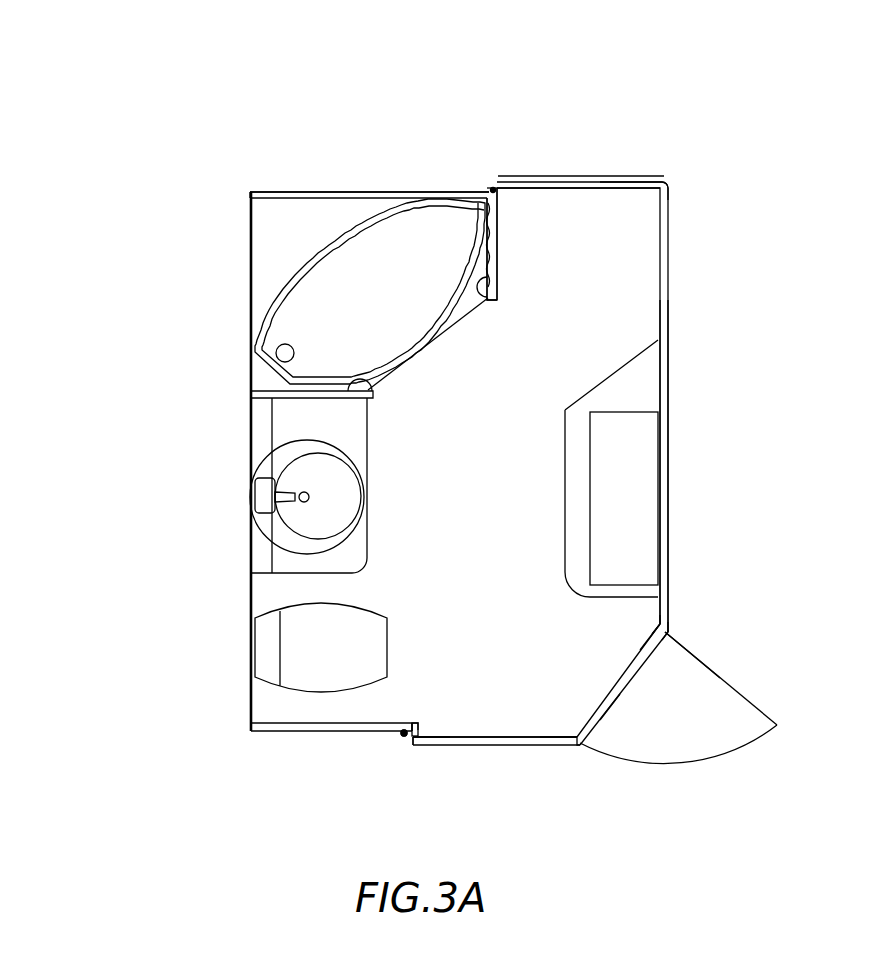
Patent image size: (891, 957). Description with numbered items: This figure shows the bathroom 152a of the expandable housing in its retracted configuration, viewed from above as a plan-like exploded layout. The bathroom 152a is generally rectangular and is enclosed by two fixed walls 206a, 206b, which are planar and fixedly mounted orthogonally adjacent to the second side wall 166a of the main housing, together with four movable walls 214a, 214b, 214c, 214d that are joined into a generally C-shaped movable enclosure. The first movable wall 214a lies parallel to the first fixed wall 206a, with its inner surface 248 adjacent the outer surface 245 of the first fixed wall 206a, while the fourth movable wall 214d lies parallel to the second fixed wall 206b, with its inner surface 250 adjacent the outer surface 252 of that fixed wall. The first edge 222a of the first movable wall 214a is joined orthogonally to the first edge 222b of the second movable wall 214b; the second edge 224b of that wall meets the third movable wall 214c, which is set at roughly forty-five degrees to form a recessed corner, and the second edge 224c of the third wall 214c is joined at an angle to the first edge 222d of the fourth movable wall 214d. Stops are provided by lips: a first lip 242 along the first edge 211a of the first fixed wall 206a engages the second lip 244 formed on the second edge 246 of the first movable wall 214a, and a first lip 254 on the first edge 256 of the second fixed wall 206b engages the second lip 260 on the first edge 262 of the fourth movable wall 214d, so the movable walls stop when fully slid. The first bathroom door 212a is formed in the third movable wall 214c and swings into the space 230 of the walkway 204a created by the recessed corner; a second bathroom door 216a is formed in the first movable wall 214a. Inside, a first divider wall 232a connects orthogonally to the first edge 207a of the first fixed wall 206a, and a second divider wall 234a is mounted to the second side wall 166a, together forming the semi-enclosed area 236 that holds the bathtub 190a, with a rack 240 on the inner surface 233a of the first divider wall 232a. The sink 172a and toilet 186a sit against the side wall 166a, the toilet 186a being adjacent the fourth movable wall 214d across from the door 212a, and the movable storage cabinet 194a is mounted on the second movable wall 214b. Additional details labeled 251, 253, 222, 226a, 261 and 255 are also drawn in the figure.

The bathroom 152a is at (402, 152).
The first fixed wall 206a is at (260, 192).
The outer surface of the first fixed wall 245 is at (347, 192).
The first edge of the first fixed wall 211a is at (412, 192).
The hinge pin 251 is at (488, 191).
The second lip 244 is at (489, 187).
The first lip 242 is at (497, 191).
The first divider wall 232a is at (498, 265).
The partition joint 253 is at (499, 193).
The first movable wall 214a is at (598, 187).
The second bathroom door 216a is at (558, 176).
The first edge of the first movable wall 222a is at (650, 187).
The first edge of the second movable wall 222b is at (670, 188).
The inner surface of the first movable wall 248 is at (577, 190).
The second movable wall 214b is at (668, 380).
The first edge of the first fixed wall 207a is at (485, 205).
The bathtub 190a is at (297, 318).
The inner surface of the first divider wall 233a is at (488, 253).
The rack 240 is at (487, 294).
The semi-enclosed rectangular area 236 is at (390, 318).
The second divider wall 234a is at (363, 402).
The second side wall of the main housing 166a is at (253, 468).
The sink 172a is at (297, 523).
The toilet 186a is at (302, 650).
The movable storage cabinet 194a is at (636, 508).
The third movable wall 214c is at (620, 690).
The second edge of the second movable wall 224b is at (668, 620).
The wall edge 222 is at (660, 637).
The door opening 226a is at (663, 738).
The second edge of the third movable wall 224c is at (575, 745).
The first bathroom door 212a is at (757, 707).
The space 230 is at (695, 718).
The walkway 204a is at (771, 543).
The fourth movable wall 214d is at (502, 745).
The inner surface of the fourth movable wall 250 is at (520, 737).
The first edge of the fourth movable wall 222d is at (567, 737).
The first edge of the fourth movable wall 262 is at (425, 735).
The wall end cap 261 is at (415, 742).
The first edge of the second fixed wall 256 is at (417, 747).
The first lip 254 is at (416, 727).
The second edge of the first movable wall 246 is at (398, 733).
The second lip 260 is at (401, 741).
The wall end 255 is at (397, 732).
The second fixed wall 206b is at (268, 731).
The outer surface of the second fixed wall 252 is at (345, 732).